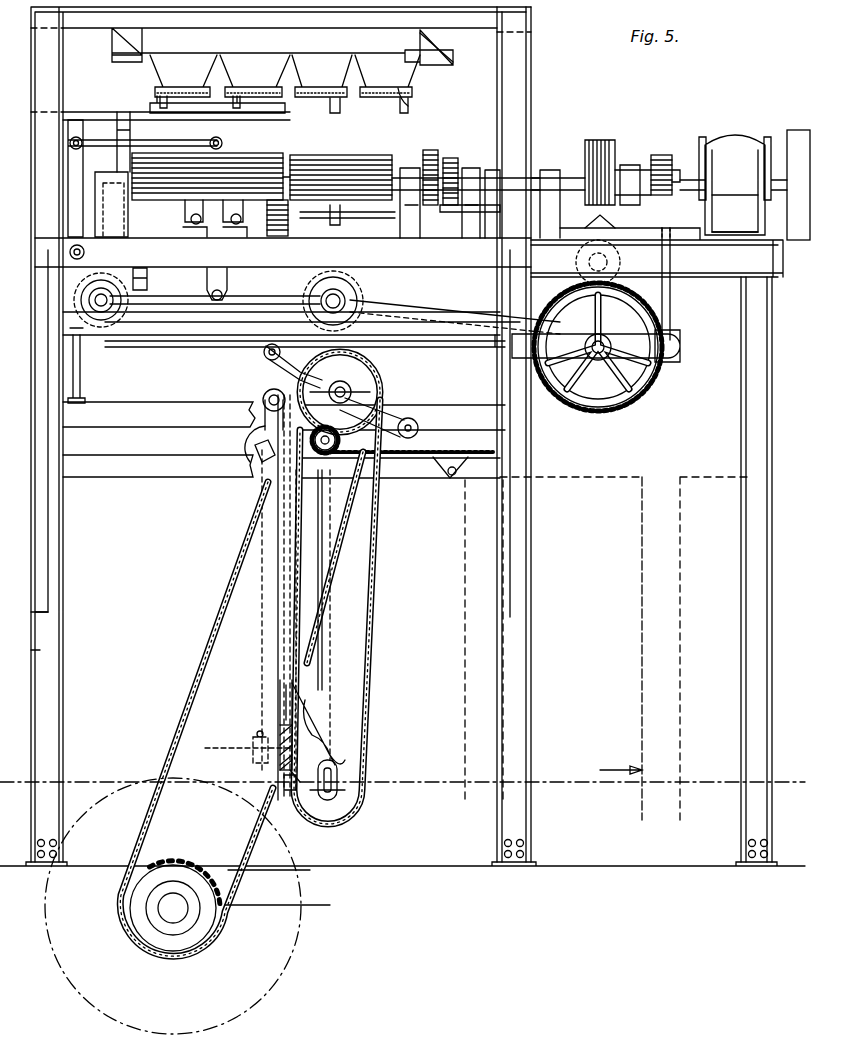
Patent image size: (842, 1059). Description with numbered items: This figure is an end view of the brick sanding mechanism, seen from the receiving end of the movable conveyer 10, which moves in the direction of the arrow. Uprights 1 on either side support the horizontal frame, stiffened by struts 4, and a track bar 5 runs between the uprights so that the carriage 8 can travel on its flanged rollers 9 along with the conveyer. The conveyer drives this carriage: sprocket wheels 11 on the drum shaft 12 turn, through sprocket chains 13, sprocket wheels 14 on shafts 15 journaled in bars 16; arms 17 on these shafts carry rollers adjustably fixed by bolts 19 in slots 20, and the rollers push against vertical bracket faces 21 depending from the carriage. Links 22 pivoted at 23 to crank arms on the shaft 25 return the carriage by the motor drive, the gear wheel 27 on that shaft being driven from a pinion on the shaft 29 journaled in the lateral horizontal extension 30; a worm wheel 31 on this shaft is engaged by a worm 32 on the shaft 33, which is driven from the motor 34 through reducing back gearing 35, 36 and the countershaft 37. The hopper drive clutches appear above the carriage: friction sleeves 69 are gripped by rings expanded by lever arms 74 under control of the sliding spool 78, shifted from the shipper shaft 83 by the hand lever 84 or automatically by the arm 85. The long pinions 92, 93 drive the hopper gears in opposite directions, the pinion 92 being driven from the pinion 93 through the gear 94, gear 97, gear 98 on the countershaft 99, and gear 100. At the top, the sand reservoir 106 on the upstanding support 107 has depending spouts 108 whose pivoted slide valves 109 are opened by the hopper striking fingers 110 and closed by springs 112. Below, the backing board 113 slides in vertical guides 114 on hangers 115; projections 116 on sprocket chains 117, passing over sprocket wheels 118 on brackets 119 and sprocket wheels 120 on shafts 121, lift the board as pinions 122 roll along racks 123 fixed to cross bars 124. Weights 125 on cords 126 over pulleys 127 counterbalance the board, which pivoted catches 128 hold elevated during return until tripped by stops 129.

The uprights 1 is at (52, 657).
The struts 4 is at (283, 252).
The track bar 5 is at (150, 330).
The carriage 8 is at (175, 297).
The flanged rollers 9 is at (104, 322).
The movable conveyer 10 is at (574, 784).
The sprocket wheels 11 is at (291, 892).
The shaft 12 is at (173, 915).
The sprocket chains 13 is at (222, 580).
The sprocket wheels 14 is at (382, 377).
The shafts 15 is at (353, 392).
The bars 16 is at (508, 418).
The arms 17 is at (285, 377).
The bolts 19 is at (280, 362).
The slots 20 is at (262, 350).
The vertical bracket faces 21 is at (300, 320).
The links 22 is at (430, 312).
The pivot 23 is at (565, 408).
The shaft 25 is at (640, 405).
The gear wheel 27 is at (662, 372).
The shaft 29 is at (640, 270).
The lateral horizontal extension 30 is at (657, 252).
The worm wheel 31 is at (548, 184).
The worm 32 is at (612, 140).
The shaft 33 is at (575, 178).
The motor 34 is at (733, 185).
The reducing back gearing 35 is at (665, 152).
The reducing back gearing 36 is at (797, 132).
The countershaft 37 is at (738, 190).
The friction sleeves 69 is at (255, 268).
The lever arms 74 is at (230, 212).
The spool 78 is at (222, 235).
The shipper shaft 83 is at (72, 245).
The hand lever 84 is at (80, 385).
The arm 85 is at (85, 178).
The long pinion 92 is at (205, 165).
The long pinion 93 is at (310, 172).
The gear 94 is at (432, 160).
The gear 97 is at (460, 166).
The gear 98 is at (448, 225).
The countershaft 99 is at (348, 215).
The gear 100 is at (282, 240).
The reservoir 106 is at (280, 46).
The upstanding support 107 is at (449, 38).
The depending spouts 108 is at (285, 76).
The pivoted slide valves 109 is at (160, 97).
The depending fingers 110 is at (412, 108).
The springs 112 is at (157, 97).
The backing board 113 is at (280, 740).
The vertical guides 114 is at (280, 515).
The hangers 115 is at (395, 341).
The projections 116 is at (290, 792).
The sprocket chains 117 is at (366, 700).
The sprocket wheels 118 is at (345, 780).
The brackets 119 is at (325, 738).
The sprocket wheels 120 is at (335, 455).
The shafts 121 is at (322, 480).
The pinions 122 is at (345, 520).
The racks 123 is at (455, 470).
The cross bars 124 is at (505, 470).
The weights 125 is at (246, 747).
The cords 126 is at (268, 637).
The pulleys 127 is at (262, 398).
The pivoted catches 128 is at (255, 460).
The stops 129 is at (248, 447).